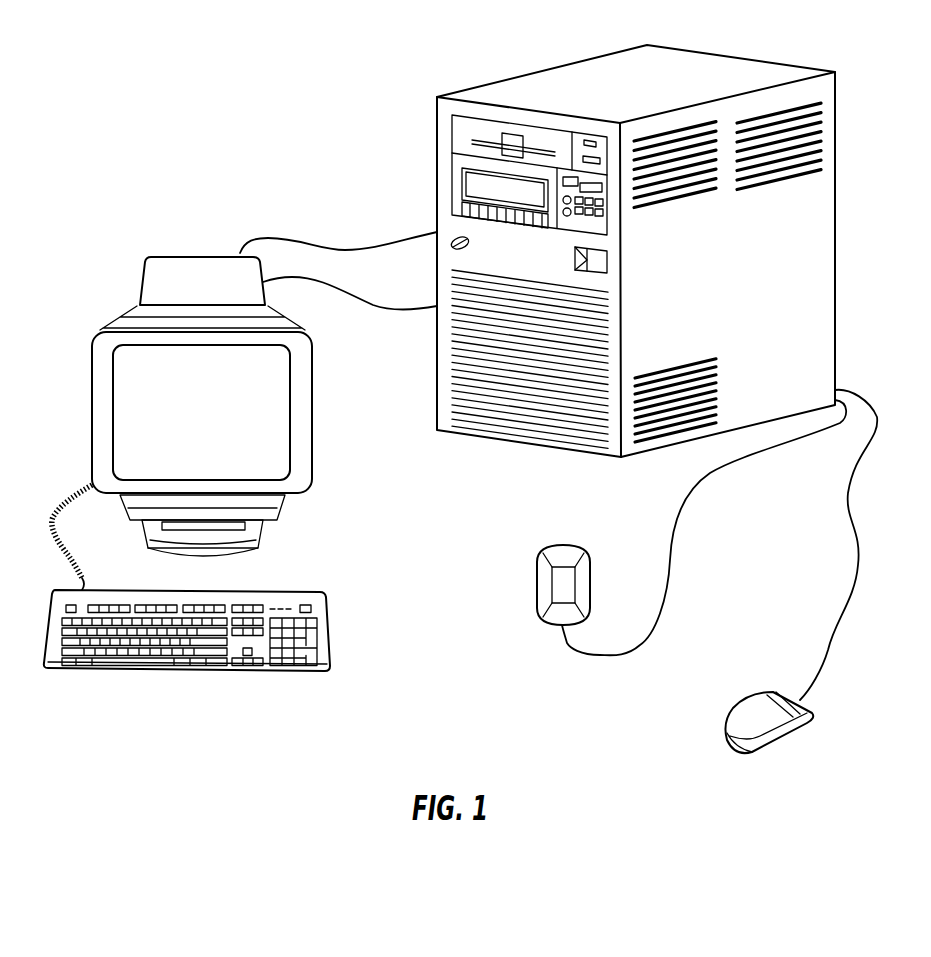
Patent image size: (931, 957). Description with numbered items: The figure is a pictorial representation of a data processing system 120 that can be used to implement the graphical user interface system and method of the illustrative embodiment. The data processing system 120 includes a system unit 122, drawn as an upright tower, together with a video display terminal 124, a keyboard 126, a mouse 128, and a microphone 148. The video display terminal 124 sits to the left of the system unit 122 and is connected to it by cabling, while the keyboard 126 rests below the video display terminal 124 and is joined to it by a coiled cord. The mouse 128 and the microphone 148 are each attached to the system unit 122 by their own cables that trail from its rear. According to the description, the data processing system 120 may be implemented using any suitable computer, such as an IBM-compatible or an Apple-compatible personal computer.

The data processing system 120 is at (168, 90).
The system unit 122 is at (447, 227).
The video display terminal 124 is at (187, 282).
The keyboard 126 is at (193, 672).
The mouse 128 is at (735, 710).
The microphone 148 is at (537, 570).